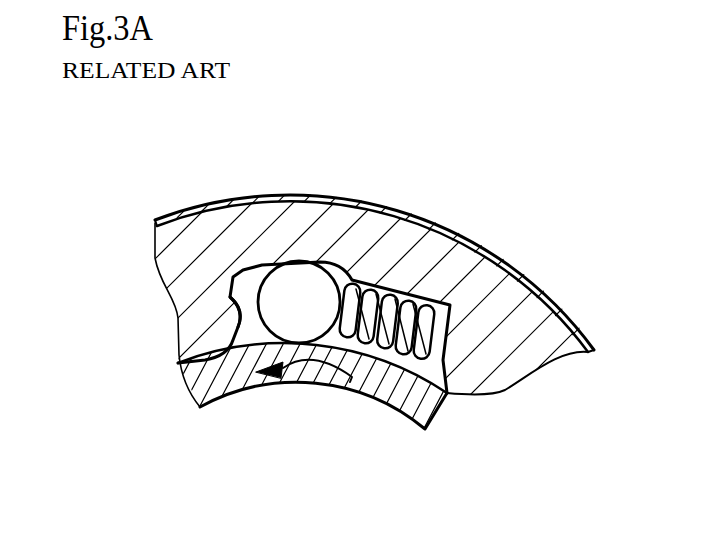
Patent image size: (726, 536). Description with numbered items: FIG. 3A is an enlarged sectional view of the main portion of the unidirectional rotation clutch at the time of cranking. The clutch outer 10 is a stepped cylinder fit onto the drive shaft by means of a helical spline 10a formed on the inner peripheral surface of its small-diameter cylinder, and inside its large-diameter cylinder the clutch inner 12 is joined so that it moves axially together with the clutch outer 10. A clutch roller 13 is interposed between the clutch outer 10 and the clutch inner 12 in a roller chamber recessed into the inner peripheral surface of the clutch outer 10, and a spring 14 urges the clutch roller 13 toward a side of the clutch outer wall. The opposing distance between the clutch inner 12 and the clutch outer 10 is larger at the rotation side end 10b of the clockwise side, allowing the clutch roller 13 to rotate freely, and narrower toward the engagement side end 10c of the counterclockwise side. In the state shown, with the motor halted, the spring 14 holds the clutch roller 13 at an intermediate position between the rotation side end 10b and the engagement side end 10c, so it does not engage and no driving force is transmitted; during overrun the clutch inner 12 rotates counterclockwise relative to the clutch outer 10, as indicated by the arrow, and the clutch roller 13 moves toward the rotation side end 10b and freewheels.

The clutch outer 10 is at (418, 258).
The helical spline 10a is at (240, 280).
The rotation side end 10b is at (370, 257).
The engagement side end 10c is at (233, 300).
The clutch inner 12 is at (418, 408).
The clutch roller 13 is at (303, 293).
The spring 14 is at (486, 247).